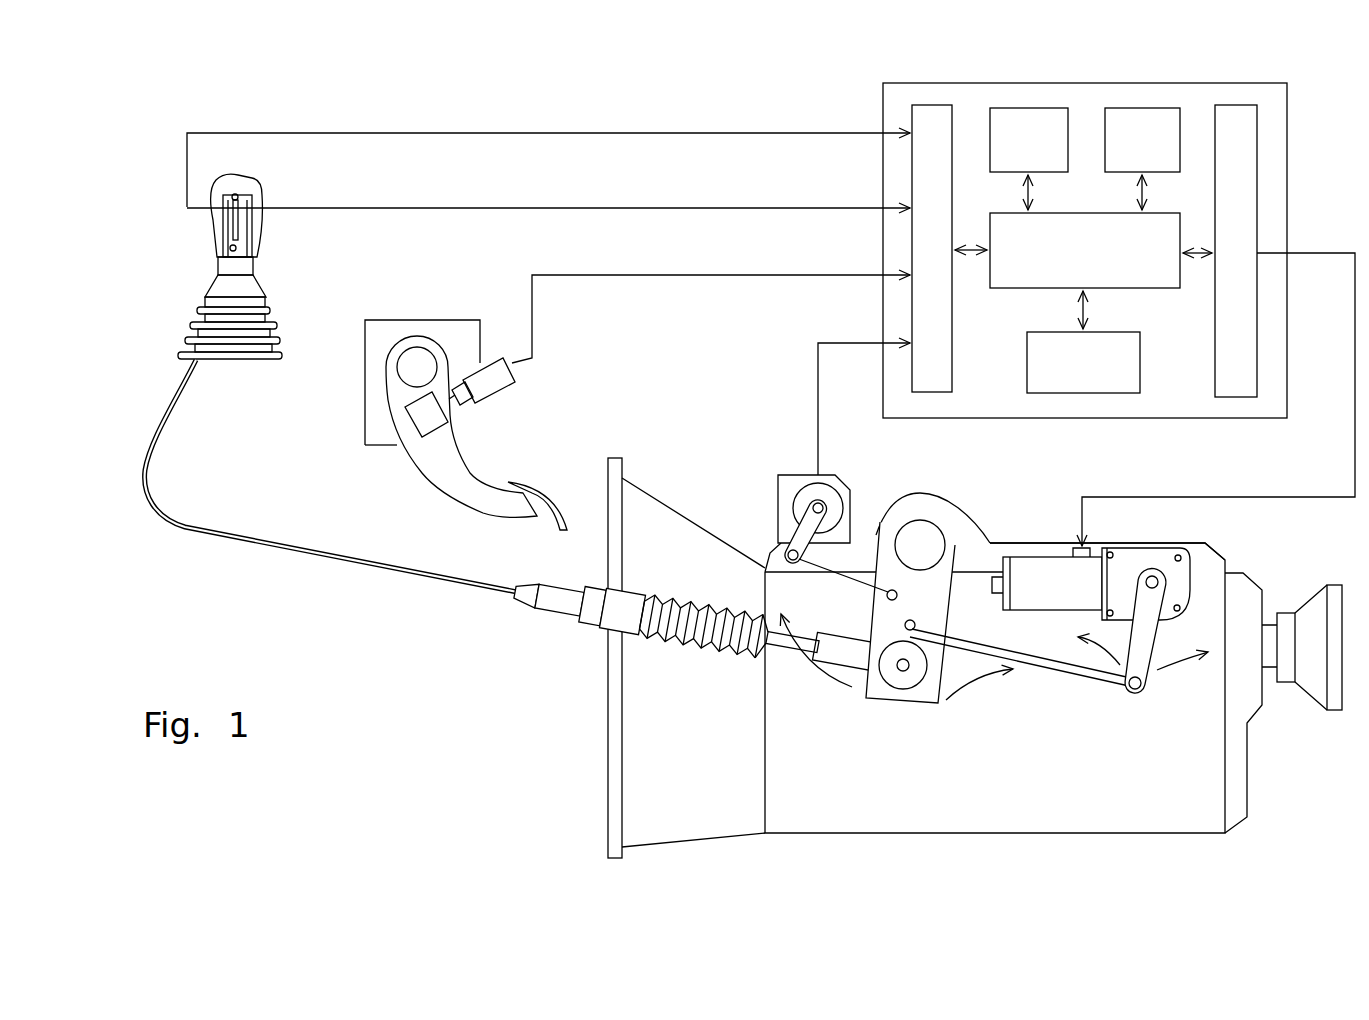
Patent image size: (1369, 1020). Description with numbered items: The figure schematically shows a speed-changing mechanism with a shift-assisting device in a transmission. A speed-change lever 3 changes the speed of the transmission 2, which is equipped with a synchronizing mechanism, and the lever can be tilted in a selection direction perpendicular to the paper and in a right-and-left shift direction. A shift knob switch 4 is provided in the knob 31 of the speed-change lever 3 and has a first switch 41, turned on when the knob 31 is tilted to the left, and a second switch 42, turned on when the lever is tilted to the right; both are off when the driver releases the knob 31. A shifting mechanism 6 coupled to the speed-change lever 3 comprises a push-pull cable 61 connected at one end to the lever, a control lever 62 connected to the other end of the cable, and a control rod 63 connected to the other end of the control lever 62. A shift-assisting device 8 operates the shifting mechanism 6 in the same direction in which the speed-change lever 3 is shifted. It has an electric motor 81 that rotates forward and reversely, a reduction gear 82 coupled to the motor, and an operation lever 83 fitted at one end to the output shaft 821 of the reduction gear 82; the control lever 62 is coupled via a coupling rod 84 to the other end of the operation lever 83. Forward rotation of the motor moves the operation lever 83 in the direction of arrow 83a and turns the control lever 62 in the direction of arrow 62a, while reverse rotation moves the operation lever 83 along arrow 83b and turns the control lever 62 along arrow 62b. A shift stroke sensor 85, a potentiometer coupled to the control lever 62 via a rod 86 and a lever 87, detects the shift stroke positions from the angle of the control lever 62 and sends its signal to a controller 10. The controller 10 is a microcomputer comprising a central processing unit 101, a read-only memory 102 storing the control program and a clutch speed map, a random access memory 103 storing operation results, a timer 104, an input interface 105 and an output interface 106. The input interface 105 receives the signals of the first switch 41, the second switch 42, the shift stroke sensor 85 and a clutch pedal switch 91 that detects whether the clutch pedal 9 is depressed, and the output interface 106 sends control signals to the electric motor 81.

The transmission 2 is at (1138, 820).
The speed-change lever 3 is at (171, 283).
The shift knob switch 4 is at (240, 194).
The shifting mechanism 6 is at (871, 704).
The shift-assisting device 8 is at (1230, 550).
The clutch pedal 9 is at (448, 507).
The controller 10 is at (891, 70).
The knob 31 is at (209, 185).
The first switch 41 is at (226, 215).
The second switch 42 is at (253, 215).
The push-pull cable 61 is at (449, 586).
The control lever 62 is at (915, 698).
The arrow 62a is at (828, 676).
The arrow 62b is at (992, 688).
The control rod 63 is at (930, 530).
The electric motor 81 is at (1035, 563).
The reduction gear 82 is at (1127, 557).
The operation lever 83 is at (1147, 686).
The arrow 83a is at (1072, 643).
The arrow 83b is at (1188, 645).
The coupling rod 84 is at (1067, 670).
The shift stroke sensor 85 is at (841, 487).
The rod 86 is at (848, 580).
The lever 87 is at (799, 537).
The clutch pedal switch 91 is at (507, 388).
The central processing unit 101 is at (1149, 290).
The read-only memory 102 is at (1013, 108).
The random access memory 103 is at (1140, 108).
The timer 104 is at (1027, 372).
The input interface 105 is at (912, 173).
The output interface 106 is at (1257, 151).
The output shaft 821 is at (1153, 577).